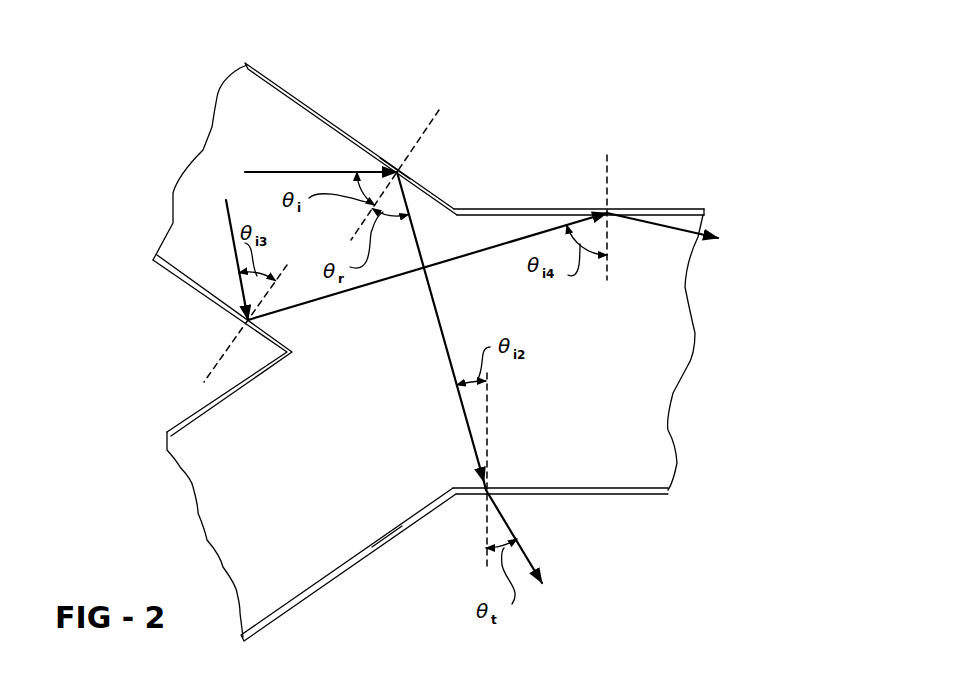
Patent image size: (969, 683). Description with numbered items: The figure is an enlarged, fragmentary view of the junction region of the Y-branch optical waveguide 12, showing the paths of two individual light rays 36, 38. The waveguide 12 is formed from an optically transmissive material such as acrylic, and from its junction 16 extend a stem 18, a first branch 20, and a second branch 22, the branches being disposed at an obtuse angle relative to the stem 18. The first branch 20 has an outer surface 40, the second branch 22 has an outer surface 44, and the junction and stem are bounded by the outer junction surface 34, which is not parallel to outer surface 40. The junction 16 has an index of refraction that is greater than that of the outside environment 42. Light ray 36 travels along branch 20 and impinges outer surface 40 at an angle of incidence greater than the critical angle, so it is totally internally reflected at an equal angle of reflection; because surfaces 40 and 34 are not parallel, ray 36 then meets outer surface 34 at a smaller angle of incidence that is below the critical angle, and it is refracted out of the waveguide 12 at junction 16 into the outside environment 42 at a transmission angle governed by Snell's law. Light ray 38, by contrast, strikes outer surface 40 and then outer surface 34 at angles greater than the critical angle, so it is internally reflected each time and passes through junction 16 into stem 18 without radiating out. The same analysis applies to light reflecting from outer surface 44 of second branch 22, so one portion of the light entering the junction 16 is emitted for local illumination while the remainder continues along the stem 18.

The optical waveguide 12 is at (701, 83).
The junction 16 is at (394, 408).
The stem 18 is at (691, 199).
The first branch 20 is at (322, 104).
The second branch 22 is at (339, 585).
The outer junction surface 34 is at (537, 207).
The light ray 36 is at (263, 171).
The light ray 38 is at (231, 241).
The outer surface 40 is at (371, 147).
The outside environment 42 is at (621, 627).
The outer surface 44 is at (387, 543).